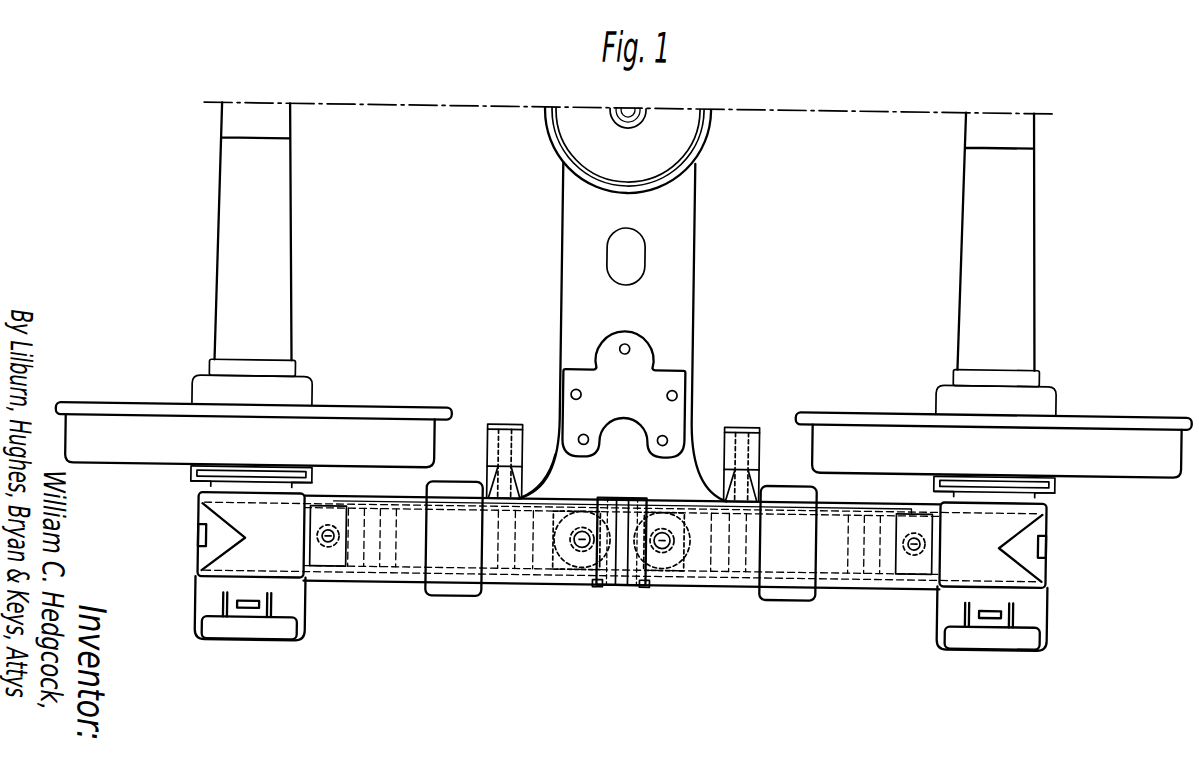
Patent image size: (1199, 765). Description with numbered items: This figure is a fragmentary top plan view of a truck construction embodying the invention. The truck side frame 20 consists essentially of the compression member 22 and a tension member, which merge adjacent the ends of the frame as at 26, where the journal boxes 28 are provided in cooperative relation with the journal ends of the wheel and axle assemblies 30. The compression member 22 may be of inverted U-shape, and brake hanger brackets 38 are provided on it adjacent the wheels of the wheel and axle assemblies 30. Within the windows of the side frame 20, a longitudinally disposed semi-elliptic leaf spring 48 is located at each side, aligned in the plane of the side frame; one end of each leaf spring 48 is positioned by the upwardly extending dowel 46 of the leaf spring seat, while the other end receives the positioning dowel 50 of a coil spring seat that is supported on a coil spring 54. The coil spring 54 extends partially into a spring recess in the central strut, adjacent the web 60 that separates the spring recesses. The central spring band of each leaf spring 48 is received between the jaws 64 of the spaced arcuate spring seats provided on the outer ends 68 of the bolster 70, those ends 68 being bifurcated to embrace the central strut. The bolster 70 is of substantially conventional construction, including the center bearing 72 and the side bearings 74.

The truck side frame 20 is at (836, 572).
The compression member 22 is at (832, 511).
The merged end portions 26 is at (622, 540).
The journal boxes 28 is at (205, 595).
The wheel and axle assemblies 30 is at (149, 415).
The brake hanger brackets 38 is at (499, 427).
The dowel 46 is at (332, 552).
The semi-elliptic leaf spring 48 is at (527, 562).
The positioning dowel 50 is at (584, 527).
The coil spring 54 is at (602, 588).
The web 60 is at (626, 518).
The jaws 64 is at (454, 599).
The outer ends of the bolster 68 is at (540, 495).
The bolster 70 is at (683, 277).
The center bearing 72 is at (682, 146).
The side bearings 74 is at (675, 381).